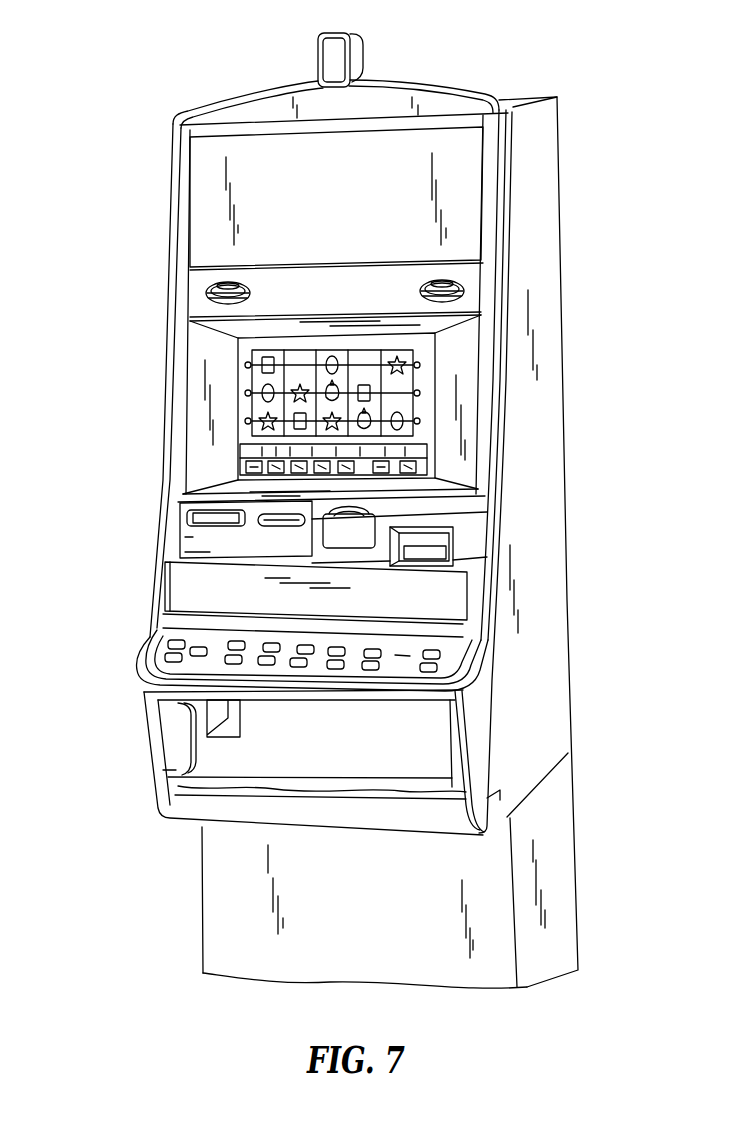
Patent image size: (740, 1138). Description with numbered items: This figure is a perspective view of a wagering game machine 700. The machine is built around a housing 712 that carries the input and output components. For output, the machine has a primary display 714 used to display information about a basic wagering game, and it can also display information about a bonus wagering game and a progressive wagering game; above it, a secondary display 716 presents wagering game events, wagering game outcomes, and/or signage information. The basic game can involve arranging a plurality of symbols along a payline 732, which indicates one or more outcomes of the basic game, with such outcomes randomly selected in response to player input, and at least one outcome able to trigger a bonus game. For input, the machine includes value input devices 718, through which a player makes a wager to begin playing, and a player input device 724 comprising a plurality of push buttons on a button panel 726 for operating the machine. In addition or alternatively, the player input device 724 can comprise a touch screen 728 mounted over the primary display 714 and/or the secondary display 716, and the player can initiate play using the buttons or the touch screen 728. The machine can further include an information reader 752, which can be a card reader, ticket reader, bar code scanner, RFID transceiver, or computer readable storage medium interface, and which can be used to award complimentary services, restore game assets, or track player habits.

The wagering game machine 700 is at (108, 24).
The housing 712 is at (540, 177).
The primary display 714 is at (233, 430).
The secondary display 716 is at (253, 193).
The value input device 718 is at (453, 552).
The player input device 724 is at (437, 653).
The button panel 726 is at (220, 650).
The touch screen 728 is at (430, 472).
The payline 732 is at (335, 350).
The information reader 752 is at (262, 527).